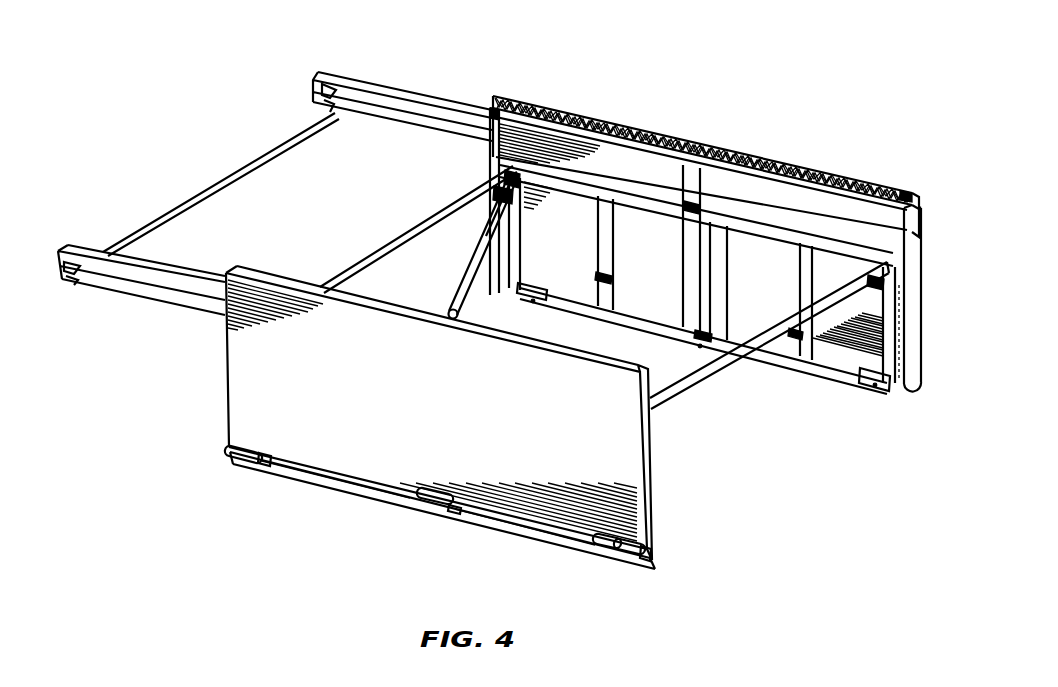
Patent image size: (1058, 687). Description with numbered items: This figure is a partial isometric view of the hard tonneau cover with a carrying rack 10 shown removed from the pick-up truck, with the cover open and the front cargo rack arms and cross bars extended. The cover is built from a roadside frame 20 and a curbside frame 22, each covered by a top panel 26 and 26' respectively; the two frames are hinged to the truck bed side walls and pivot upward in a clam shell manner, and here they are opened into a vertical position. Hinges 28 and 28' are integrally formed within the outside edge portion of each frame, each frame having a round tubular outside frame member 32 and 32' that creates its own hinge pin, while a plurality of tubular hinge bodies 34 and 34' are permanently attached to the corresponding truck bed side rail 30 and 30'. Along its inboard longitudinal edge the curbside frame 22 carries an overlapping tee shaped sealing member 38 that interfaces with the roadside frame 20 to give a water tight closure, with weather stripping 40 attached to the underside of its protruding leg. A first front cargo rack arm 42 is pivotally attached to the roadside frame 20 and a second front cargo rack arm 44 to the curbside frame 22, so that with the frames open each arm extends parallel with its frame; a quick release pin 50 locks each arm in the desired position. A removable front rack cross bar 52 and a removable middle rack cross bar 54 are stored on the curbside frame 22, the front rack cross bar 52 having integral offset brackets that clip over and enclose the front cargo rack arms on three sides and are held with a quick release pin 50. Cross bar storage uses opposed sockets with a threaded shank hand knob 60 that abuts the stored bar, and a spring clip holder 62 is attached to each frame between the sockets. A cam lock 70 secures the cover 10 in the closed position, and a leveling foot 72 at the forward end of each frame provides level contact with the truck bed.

The hard tonneau cover with a carrying rack 10 is at (752, 118).
The roadside frame 20 is at (227, 433).
The curbside frame 22 is at (902, 393).
The top panel 26 is at (482, 416).
The top panel 26' is at (696, 159).
The hinge 28 is at (613, 583).
The hinge 28' is at (844, 411).
The truck bed side rail 30 is at (689, 574).
The truck bed side rail 30' is at (703, 356).
The round tubular outside frame member 32 is at (436, 510).
The round tubular outside frame member 32' is at (461, 244).
The tubular hinge body 34 is at (343, 516).
The tubular hinge body 34' is at (856, 387).
The tee shaped sealing member 38 is at (637, 127).
The weather stripping 40 is at (557, 100).
The first front cargo rack arm 42 is at (192, 317).
The second front cargo rack arm 44 is at (383, 80).
The quick release pin 50 is at (323, 107).
The front rack cross bar 52 is at (200, 193).
The middle rack cross bar 54 is at (400, 240).
The threaded shank hand knob 60 is at (893, 268).
The spring clip holder 62 is at (690, 207).
The cam lock 70 is at (893, 193).
The leveling foot 72 is at (487, 110).